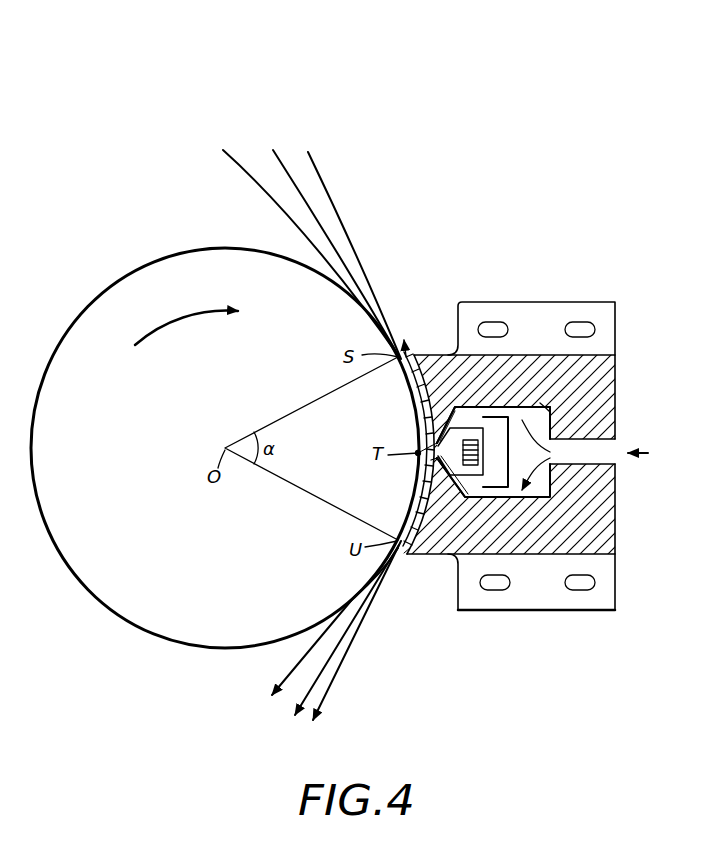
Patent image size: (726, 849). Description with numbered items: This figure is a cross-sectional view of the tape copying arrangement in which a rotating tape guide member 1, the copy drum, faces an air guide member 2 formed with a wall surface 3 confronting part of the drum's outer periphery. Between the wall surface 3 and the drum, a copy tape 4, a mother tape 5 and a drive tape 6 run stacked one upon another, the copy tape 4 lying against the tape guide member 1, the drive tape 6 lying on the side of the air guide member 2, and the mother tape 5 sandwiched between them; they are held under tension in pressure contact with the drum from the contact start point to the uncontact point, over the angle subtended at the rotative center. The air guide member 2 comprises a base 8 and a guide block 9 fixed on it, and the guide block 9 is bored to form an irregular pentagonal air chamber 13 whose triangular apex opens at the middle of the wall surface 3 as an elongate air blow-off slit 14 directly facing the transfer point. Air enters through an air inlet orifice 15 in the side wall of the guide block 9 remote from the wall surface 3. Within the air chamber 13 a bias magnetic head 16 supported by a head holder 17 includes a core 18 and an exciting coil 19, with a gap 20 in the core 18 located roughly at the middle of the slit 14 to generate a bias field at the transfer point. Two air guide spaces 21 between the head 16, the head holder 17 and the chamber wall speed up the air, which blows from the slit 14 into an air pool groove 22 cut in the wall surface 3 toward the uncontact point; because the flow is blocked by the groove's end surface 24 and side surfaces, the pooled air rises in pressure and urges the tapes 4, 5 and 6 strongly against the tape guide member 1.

The tape guide member 1 is at (105, 598).
The air guide member 2 is at (528, 457).
The wall surface 3 is at (412, 352).
The copy tape 4 is at (228, 150).
The mother tape 5 is at (275, 152).
The drive tape 6 is at (310, 152).
The base 8 is at (608, 594).
The guide block 9 is at (609, 530).
The air chamber 13 is at (551, 412).
The air blow-off slit 14 is at (431, 444).
The air inlet orifice 15 is at (613, 463).
The bias magnetic head 16 is at (485, 427).
The head holder 17 is at (540, 403).
The core 18 is at (475, 470).
The exciting coil 19 is at (432, 462).
The gap 20 is at (430, 456).
The air guide spaces 21 is at (452, 409).
The air pool groove 22 is at (432, 500).
The end surface 24 is at (420, 546).